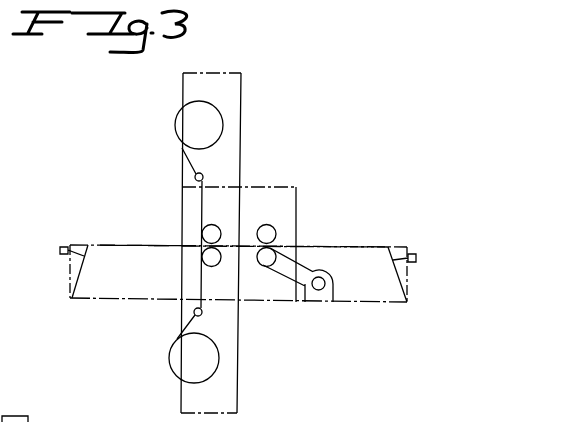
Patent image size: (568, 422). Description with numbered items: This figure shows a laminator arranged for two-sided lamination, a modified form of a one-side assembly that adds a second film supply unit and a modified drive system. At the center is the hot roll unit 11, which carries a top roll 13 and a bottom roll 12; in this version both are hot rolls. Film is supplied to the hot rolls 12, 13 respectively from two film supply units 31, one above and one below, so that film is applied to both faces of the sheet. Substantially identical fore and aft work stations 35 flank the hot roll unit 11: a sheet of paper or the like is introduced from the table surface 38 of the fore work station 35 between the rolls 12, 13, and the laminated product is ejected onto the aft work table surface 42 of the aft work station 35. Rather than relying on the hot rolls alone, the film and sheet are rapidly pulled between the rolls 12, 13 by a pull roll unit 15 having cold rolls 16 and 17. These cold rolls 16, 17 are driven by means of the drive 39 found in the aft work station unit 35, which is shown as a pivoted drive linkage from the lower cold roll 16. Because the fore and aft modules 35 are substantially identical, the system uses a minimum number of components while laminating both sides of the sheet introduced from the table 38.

The hot roll unit 11 is at (221, 285).
The bottom roll 12 is at (208, 258).
The top roll 13 is at (213, 228).
The pull roll unit 15 is at (190, 239).
The cold roll 16 is at (265, 267).
The cold roll 17 is at (267, 228).
The film supply unit 31 is at (223, 125).
The work station 35 is at (118, 278).
The surface of fore work station 38 is at (160, 243).
The drive motor 39 is at (327, 298).
The aft work table surface 42 is at (368, 247).